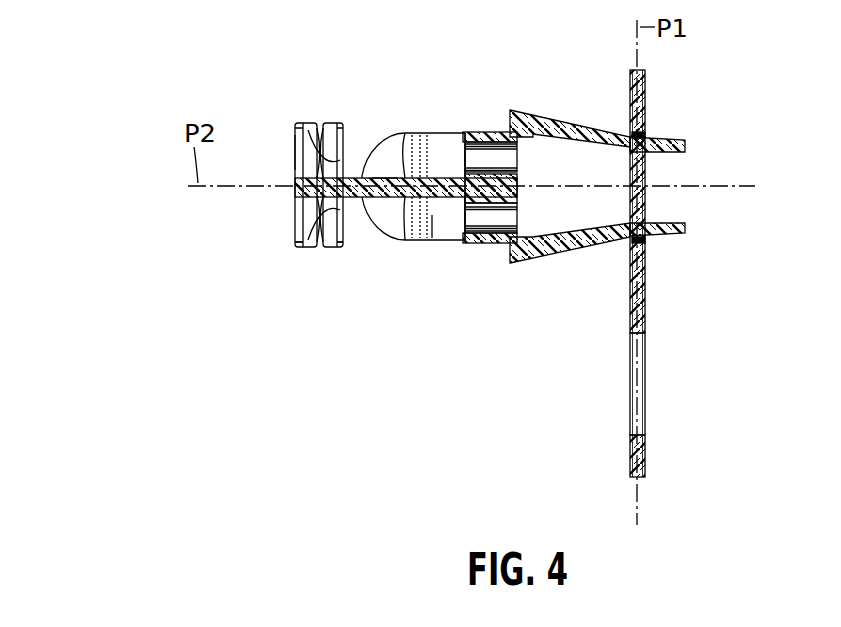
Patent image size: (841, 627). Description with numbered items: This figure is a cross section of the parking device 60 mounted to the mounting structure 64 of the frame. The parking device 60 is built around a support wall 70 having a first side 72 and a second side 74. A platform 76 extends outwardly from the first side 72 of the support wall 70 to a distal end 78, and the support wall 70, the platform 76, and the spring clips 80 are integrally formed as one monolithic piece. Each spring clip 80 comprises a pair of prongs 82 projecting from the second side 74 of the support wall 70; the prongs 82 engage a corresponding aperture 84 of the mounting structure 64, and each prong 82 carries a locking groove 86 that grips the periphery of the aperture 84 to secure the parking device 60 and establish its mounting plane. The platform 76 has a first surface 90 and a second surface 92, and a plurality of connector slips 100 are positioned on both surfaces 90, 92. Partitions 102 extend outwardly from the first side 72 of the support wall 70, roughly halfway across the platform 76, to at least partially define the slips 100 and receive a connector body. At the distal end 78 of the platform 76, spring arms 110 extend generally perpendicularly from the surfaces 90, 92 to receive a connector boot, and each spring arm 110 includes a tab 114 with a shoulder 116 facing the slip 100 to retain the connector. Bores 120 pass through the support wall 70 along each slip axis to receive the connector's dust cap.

The parking device 60 is at (254, 102).
The mounting structure 64 is at (646, 284).
The support wall 70 is at (485, 127).
The first side 72 is at (460, 133).
The second side 74 is at (518, 181).
The platform 76 is at (383, 175).
The distal end 78 is at (296, 193).
The spring clip 80 is at (567, 108).
The prong 82 is at (685, 147).
The aperture 84 is at (643, 205).
The locking groove 86 is at (638, 132).
The first surface 90 is at (407, 148).
The second surface 92 is at (380, 232).
The connector slip 100 is at (320, 121).
The partition 102 is at (433, 133).
The spring arm 110 is at (295, 150).
The tab 114 is at (299, 248).
The shoulder 116 is at (341, 214).
The bore 120 is at (519, 231).